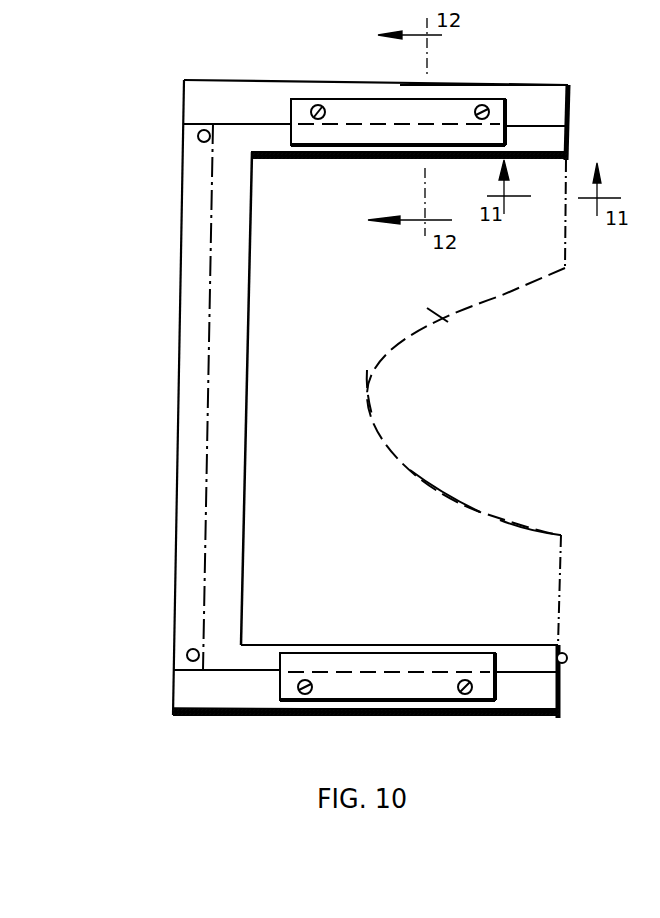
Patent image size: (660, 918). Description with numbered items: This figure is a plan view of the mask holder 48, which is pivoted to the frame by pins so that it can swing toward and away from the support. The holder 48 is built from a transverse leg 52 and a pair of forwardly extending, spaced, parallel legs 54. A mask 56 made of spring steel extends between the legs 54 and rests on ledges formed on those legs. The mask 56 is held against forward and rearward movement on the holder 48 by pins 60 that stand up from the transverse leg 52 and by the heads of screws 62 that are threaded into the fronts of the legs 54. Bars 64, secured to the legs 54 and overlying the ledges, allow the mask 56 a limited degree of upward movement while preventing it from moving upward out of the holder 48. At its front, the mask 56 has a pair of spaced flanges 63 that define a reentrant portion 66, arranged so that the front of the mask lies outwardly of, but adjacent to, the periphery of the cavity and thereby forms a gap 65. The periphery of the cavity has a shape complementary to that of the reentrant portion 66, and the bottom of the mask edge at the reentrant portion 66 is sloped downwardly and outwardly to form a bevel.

The mask holder 48 is at (348, 384).
The transverse leg 52 is at (188, 272).
The legs 54 is at (484, 97).
The mask 56 is at (455, 318).
The pins 60 is at (206, 143).
The screws 62 is at (574, 664).
The flanges 63 is at (515, 545).
The bars 64 is at (349, 110).
The gap 65 is at (462, 468).
The reentrant portion 66 is at (370, 393).